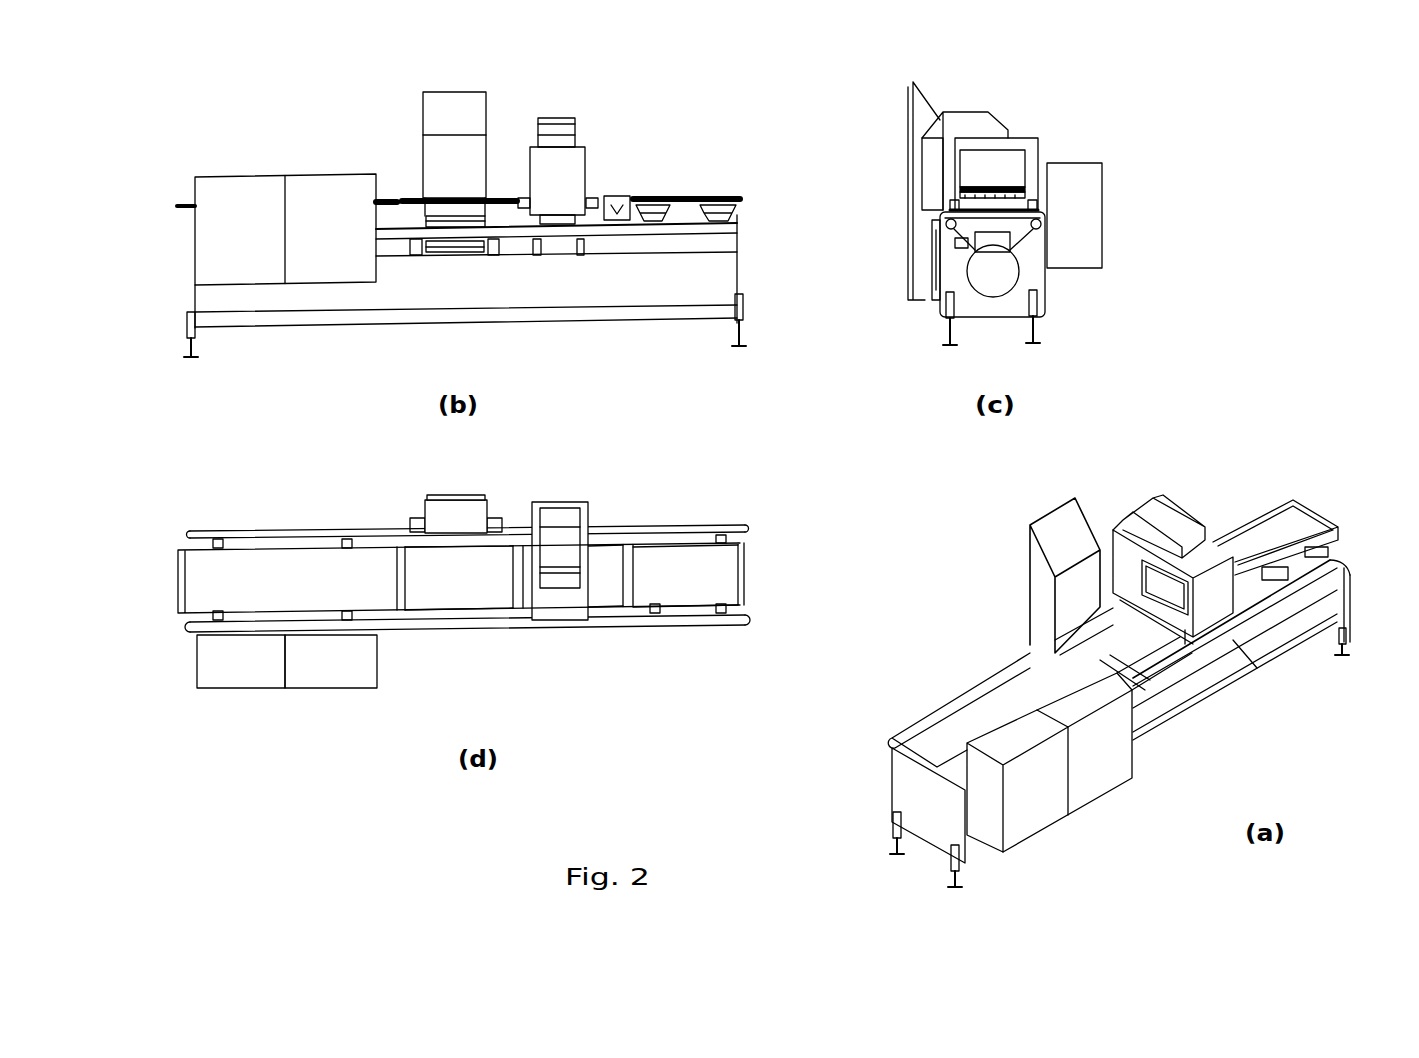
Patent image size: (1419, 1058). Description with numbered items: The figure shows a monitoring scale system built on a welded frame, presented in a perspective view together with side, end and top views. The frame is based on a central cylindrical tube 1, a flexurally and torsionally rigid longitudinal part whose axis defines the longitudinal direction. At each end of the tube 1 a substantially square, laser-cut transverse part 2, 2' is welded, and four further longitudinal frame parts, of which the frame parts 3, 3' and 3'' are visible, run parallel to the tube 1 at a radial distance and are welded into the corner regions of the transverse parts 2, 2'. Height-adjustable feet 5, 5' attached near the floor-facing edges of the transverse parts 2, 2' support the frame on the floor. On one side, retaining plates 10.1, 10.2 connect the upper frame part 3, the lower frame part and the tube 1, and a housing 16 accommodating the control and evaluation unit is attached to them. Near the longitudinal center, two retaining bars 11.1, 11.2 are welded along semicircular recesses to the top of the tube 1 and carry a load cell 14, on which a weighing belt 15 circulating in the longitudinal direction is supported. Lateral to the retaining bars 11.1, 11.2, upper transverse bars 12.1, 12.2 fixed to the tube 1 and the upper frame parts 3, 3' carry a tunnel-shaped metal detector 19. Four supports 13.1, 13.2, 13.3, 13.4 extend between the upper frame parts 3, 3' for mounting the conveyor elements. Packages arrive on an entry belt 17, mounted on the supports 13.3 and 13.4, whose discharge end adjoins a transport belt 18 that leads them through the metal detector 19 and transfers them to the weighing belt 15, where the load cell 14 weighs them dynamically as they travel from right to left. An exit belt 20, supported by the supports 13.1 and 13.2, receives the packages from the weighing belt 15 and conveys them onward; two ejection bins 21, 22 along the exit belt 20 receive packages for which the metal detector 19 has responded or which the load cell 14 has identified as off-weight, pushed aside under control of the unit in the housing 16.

The central cylindrical tube 1 is at (690, 277).
The transverse part 2 is at (541, 538).
The transverse part 2' is at (1066, 448).
The upper frame part 3 is at (468, 493).
The upper frame part 3' is at (792, 457).
The frame part 3'' is at (1020, 523).
The foot 5 is at (740, 612).
The foot 5' is at (895, 585).
The retaining plate 10.1 is at (407, 250).
The retaining plate 10.2 is at (507, 253).
The retaining bar 11.1 is at (432, 257).
The retaining bar 11.2 is at (480, 260).
The upper transverse bar 12.1 is at (532, 253).
The upper transverse bar 12.2 is at (573, 253).
The support 13.1 is at (215, 540).
The support 13.2 is at (350, 542).
The support 13.3 is at (650, 223).
The support 13.4 is at (740, 245).
The load cell 14 is at (440, 215).
The weighing belt 15 is at (467, 195).
The housing 16 is at (438, 160).
The entry belt 17 is at (387, 197).
The transport belt 18 is at (600, 202).
The metal detector 19 is at (573, 170).
The exit belt 20 is at (282, 585).
The ejection bin 21 is at (230, 673).
The ejection bin 22 is at (327, 670).